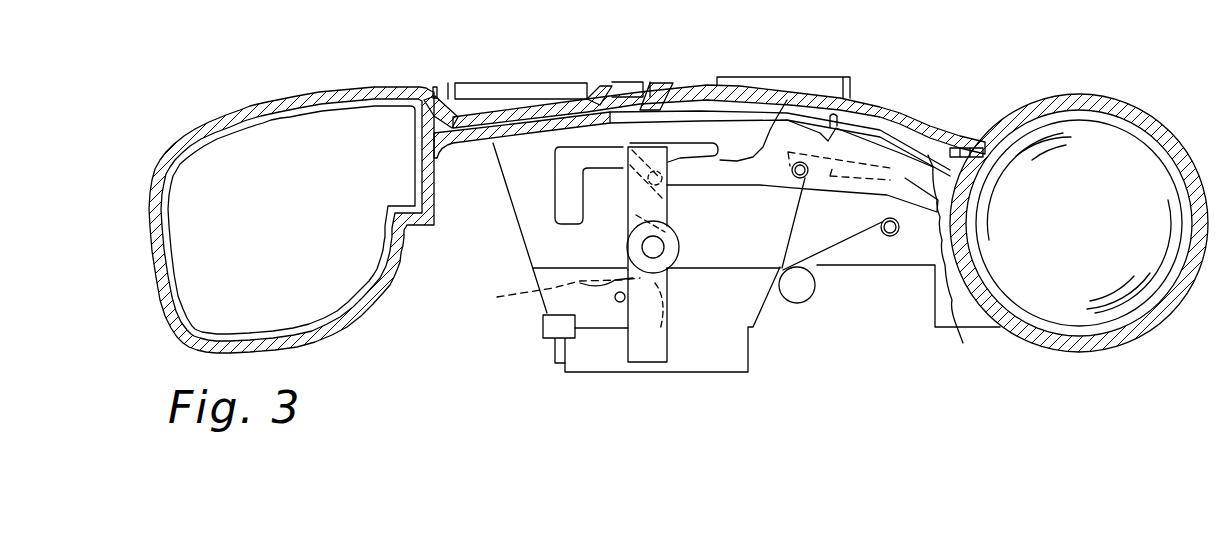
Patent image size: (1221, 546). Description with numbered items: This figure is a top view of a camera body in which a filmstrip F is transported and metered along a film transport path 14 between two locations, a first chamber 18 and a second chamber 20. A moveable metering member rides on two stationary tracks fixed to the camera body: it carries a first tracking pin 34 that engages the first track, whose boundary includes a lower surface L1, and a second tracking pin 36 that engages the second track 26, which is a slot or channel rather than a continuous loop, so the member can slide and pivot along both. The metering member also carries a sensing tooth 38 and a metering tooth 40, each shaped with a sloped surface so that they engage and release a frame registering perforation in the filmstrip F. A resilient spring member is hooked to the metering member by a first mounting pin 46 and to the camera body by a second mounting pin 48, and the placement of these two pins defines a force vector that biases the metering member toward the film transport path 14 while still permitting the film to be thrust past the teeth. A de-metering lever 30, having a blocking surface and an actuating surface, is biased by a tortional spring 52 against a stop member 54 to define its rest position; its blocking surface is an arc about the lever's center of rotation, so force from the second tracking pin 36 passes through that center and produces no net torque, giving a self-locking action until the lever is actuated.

The film transport path 14 is at (650, 110).
The first chamber 18 is at (217, 160).
The second chamber 20 is at (1122, 157).
The second track 26 is at (557, 205).
The de-metering lever 30 is at (650, 353).
The first tracking pin 34 is at (907, 133).
The second tracking pin 36 is at (667, 177).
The sensing tooth 38 is at (780, 127).
The metering tooth 40 is at (847, 113).
The first mounting pin 46 is at (803, 177).
The second mounting pin 48 is at (890, 238).
The tortional spring 52 is at (553, 295).
The stop member 54 is at (620, 300).
The filmstrip F is at (735, 112).
The lower surface L1 is at (959, 264).